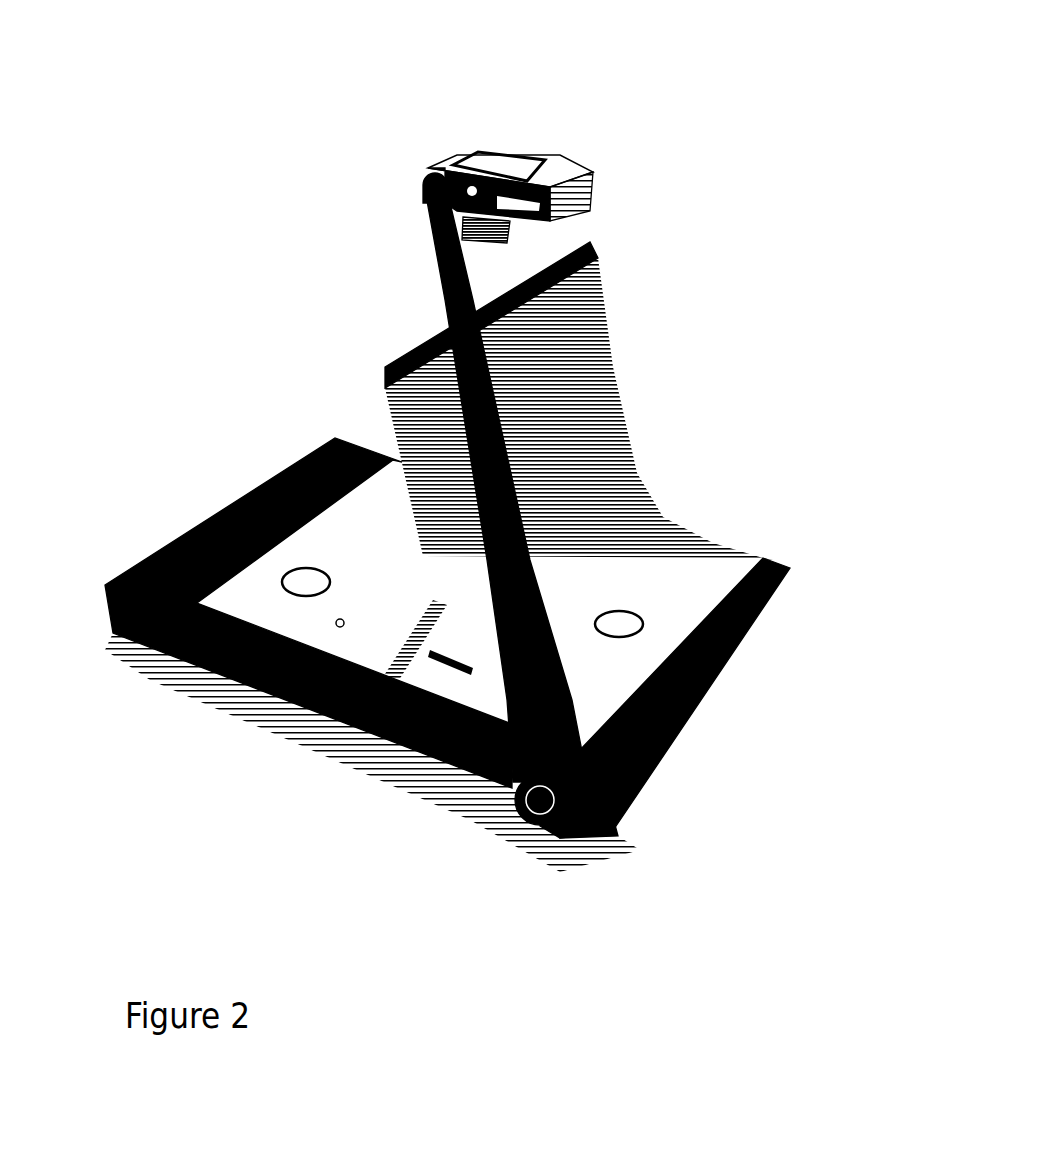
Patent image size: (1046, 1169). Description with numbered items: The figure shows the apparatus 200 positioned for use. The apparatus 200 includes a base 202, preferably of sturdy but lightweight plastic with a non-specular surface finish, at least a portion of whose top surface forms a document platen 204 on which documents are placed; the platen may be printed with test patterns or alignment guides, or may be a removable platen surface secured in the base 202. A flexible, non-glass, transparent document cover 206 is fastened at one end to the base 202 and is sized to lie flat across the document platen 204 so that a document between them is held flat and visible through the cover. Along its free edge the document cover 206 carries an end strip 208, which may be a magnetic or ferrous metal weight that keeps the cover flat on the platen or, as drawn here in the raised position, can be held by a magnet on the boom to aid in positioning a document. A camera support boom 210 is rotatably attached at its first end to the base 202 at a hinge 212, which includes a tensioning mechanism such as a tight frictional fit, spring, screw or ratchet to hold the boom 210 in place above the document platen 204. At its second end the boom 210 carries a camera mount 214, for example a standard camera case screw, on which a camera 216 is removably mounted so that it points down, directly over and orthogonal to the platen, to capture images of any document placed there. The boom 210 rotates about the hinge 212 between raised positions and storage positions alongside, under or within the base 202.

The apparatus 200 is at (71, 114).
The base 202 is at (206, 677).
The document platen 204 is at (283, 600).
The document cover 206 is at (602, 473).
The end strip 208 is at (596, 249).
The camera support boom 210 is at (432, 274).
The hinge 212 is at (531, 819).
The camera mount 214 is at (421, 195).
The camera 216 is at (598, 172).